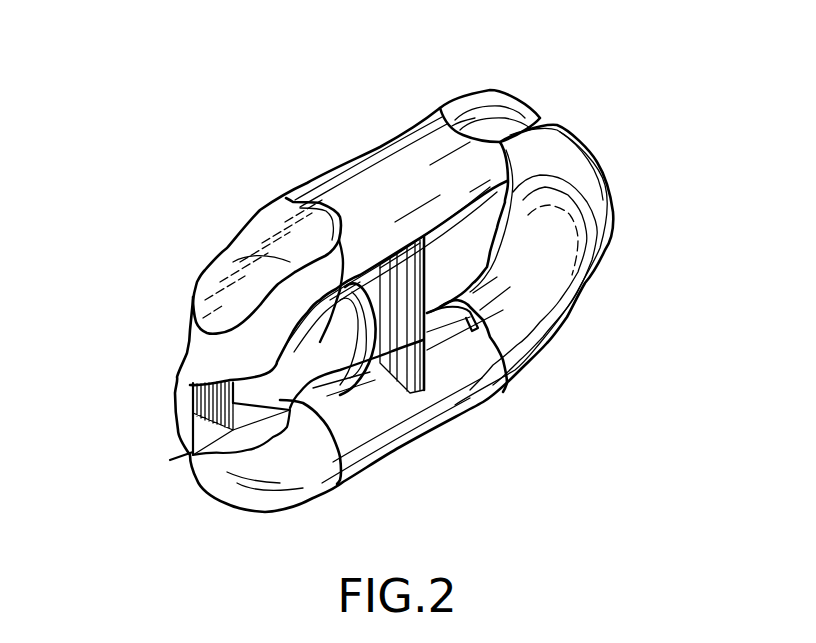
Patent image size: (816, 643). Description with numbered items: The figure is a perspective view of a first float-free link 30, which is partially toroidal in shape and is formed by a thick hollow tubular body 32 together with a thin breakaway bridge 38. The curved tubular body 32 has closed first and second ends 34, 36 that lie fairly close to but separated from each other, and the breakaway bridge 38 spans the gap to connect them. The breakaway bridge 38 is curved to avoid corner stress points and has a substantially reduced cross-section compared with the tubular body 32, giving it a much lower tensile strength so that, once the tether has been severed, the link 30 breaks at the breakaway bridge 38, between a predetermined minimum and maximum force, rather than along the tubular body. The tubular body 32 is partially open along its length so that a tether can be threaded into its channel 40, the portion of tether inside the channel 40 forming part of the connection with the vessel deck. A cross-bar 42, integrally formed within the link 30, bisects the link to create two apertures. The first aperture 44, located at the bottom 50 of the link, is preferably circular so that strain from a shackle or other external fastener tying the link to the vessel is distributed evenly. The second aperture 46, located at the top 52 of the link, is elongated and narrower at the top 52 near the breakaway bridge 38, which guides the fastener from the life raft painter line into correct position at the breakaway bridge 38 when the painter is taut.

The float-free link 30 is at (578, 87).
The tubular body 32 is at (388, 166).
The first end 34 is at (197, 412).
The second end 36 is at (200, 483).
The breakaway bridge 38 is at (193, 447).
The channel 40 is at (212, 285).
The cross-bar 42 is at (427, 280).
The first aperture 44 is at (480, 225).
The second aperture 46 is at (317, 340).
The bottom 50 is at (605, 250).
The top 52 is at (190, 443).